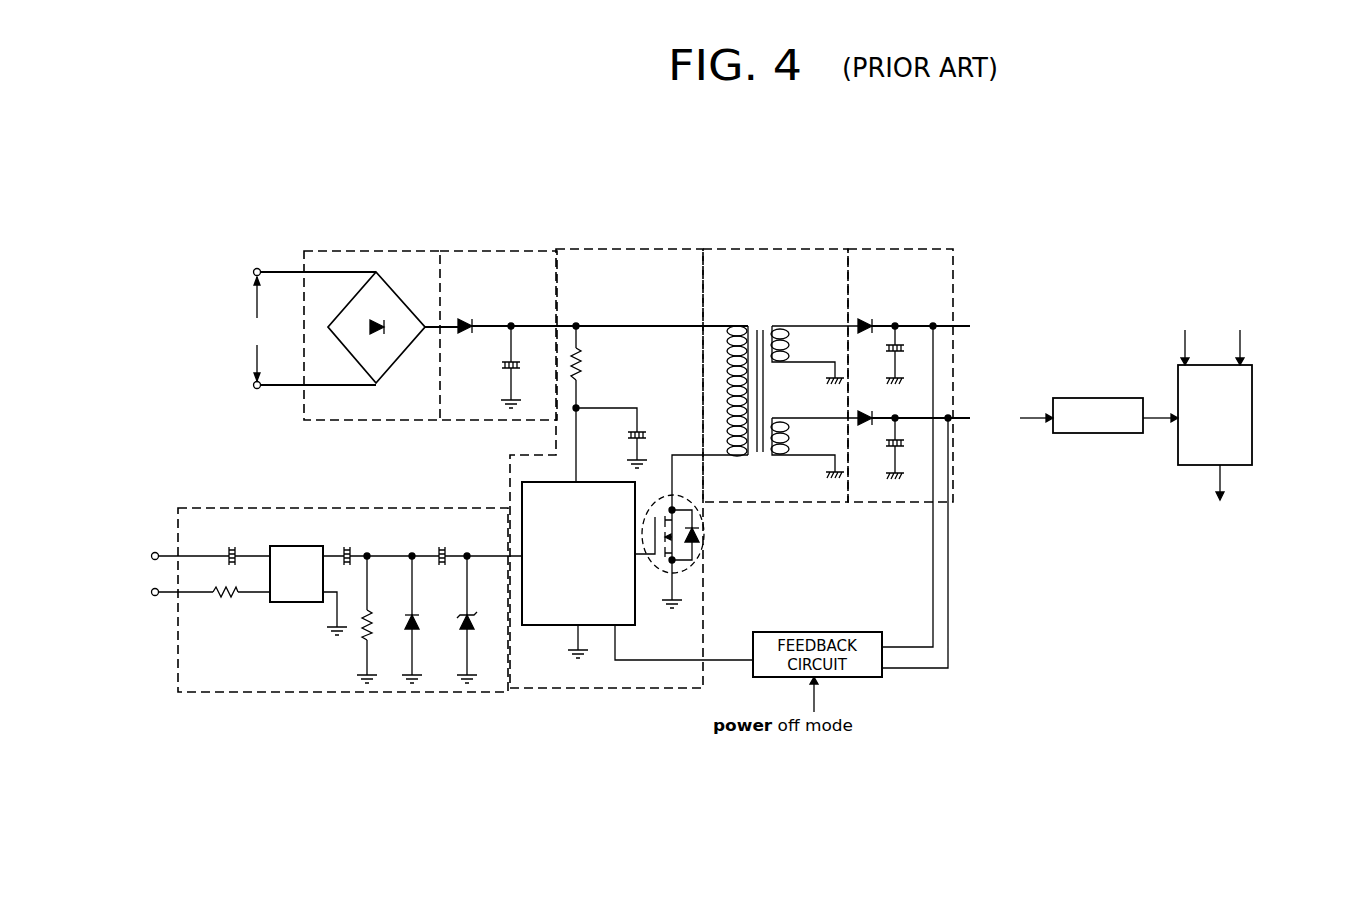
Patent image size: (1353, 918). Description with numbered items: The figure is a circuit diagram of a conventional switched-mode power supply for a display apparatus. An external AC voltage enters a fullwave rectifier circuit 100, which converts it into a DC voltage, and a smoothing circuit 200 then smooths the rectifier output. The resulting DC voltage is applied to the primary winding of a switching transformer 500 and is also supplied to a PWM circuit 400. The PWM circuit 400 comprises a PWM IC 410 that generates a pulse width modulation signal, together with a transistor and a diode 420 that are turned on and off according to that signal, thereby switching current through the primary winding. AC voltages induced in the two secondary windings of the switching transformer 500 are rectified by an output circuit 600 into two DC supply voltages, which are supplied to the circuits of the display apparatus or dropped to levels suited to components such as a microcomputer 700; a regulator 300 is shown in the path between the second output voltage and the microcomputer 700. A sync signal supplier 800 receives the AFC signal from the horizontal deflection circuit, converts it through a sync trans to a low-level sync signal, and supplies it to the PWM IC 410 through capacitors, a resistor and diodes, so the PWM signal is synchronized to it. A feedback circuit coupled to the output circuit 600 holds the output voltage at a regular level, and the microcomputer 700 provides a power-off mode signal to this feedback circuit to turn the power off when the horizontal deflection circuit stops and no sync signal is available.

The fullwave rectifier circuit 100 is at (385, 251).
The smoothing circuit 200 is at (503, 251).
The regulator 300 is at (1110, 398).
The PWM circuit 400 is at (640, 249).
The PWM IC 410 is at (599, 482).
The transistor and diode 420 is at (705, 556).
The switching transformer 500 is at (770, 249).
The output circuit 600 is at (885, 249).
The microcomputer 700 is at (1252, 413).
The sync signal supplier 800 is at (312, 508).